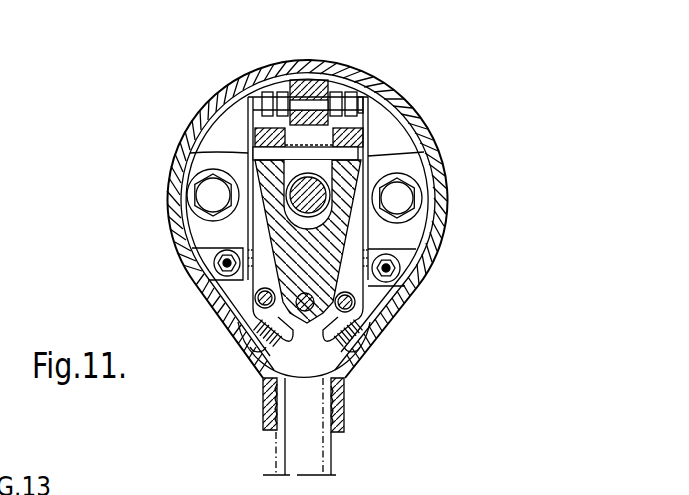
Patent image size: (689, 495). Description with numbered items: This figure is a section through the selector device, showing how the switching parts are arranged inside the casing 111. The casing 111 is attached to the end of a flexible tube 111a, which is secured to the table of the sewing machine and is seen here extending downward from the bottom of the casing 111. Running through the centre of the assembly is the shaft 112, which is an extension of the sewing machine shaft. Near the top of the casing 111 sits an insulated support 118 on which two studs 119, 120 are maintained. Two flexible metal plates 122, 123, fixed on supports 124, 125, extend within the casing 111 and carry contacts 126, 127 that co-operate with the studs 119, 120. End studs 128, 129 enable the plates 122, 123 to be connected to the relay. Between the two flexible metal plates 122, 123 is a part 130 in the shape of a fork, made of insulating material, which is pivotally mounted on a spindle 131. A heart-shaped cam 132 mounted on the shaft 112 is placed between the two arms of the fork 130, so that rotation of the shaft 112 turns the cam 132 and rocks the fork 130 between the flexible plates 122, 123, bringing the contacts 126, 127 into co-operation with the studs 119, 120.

The casing 111 is at (197, 110).
The flexible tube 111a is at (282, 437).
The shaft 112 is at (302, 203).
The insulated support 118 is at (310, 80).
The stud 119 is at (283, 93).
The stud 120 is at (345, 94).
The flexible metal plate 122 is at (190, 153).
The flexible metal plate 123 is at (403, 110).
The support 124 is at (212, 248).
The support 125 is at (403, 258).
The contact 126 is at (250, 95).
The contact 127 is at (373, 118).
The end stud 128 is at (258, 341).
The end stud 129 is at (358, 333).
The fork 130 is at (276, 266).
The spindle 131 is at (343, 373).
The heart-shaped cam 132 is at (366, 156).